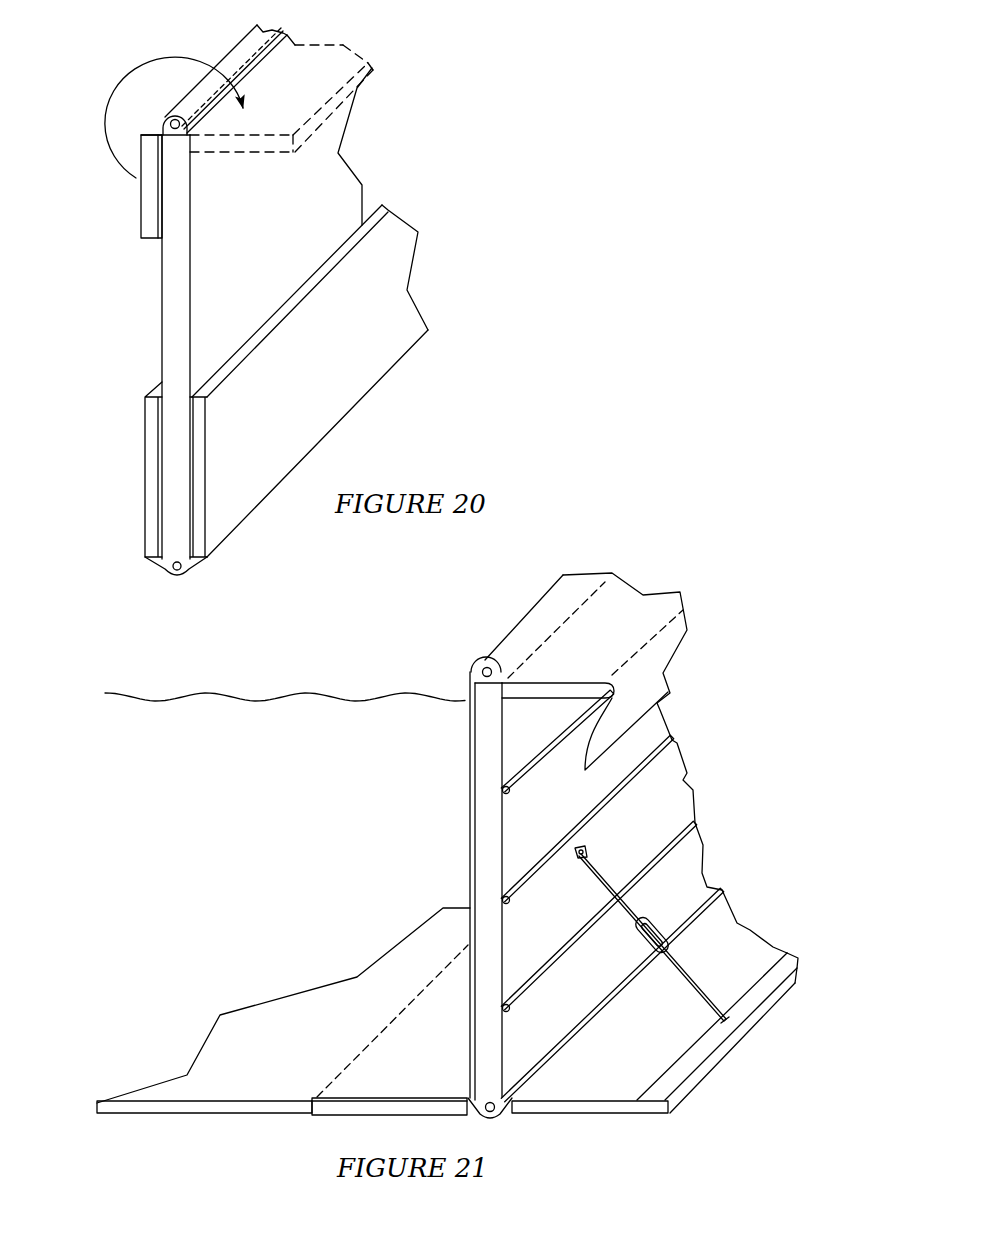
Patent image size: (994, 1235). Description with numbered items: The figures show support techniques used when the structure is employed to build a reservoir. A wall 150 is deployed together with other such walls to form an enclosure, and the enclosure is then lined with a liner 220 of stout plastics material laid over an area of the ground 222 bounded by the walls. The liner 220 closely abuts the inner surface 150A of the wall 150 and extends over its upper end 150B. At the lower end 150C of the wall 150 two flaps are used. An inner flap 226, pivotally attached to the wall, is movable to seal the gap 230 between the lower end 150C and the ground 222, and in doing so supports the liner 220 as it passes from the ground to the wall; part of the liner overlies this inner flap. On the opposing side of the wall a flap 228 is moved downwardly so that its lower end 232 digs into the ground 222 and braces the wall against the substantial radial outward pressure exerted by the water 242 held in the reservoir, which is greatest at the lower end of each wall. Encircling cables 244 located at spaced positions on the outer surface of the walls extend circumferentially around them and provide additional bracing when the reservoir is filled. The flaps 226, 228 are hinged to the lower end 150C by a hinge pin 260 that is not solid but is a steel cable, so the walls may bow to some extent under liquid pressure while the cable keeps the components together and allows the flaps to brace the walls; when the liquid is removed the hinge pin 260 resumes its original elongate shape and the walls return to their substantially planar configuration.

In FIG. 21, the wall 150 is at (667, 813).
In FIG. 21, the inner surface 150A is at (470, 1035).
In FIG. 21, the upper end 150B is at (484, 662).
In FIG. 20, the lower end 150C is at (158, 583).
In FIG. 21, the lower end 150C is at (508, 1121).
In FIG. 21, the liner 220 is at (468, 777).
In FIG. 21, the ground 222 is at (135, 1062).
In FIG. 20, the inner flap 226 is at (145, 473).
In FIG. 21, the inner flap 226 is at (265, 1113).
In FIG. 20, the flap 228 is at (352, 352).
In FIG. 21, the flap 228 is at (700, 1060).
In FIG. 20, the gap 230 is at (110, 515).
In FIG. 20, the lower end 232 is at (248, 542).
In FIG. 21, the water 242 is at (232, 792).
In FIG. 21, the encircling cables 244 is at (653, 753).
In FIG. 20, the hinge pin 260 is at (179, 571).
In FIG. 21, the hinge pin 260 is at (508, 1097).